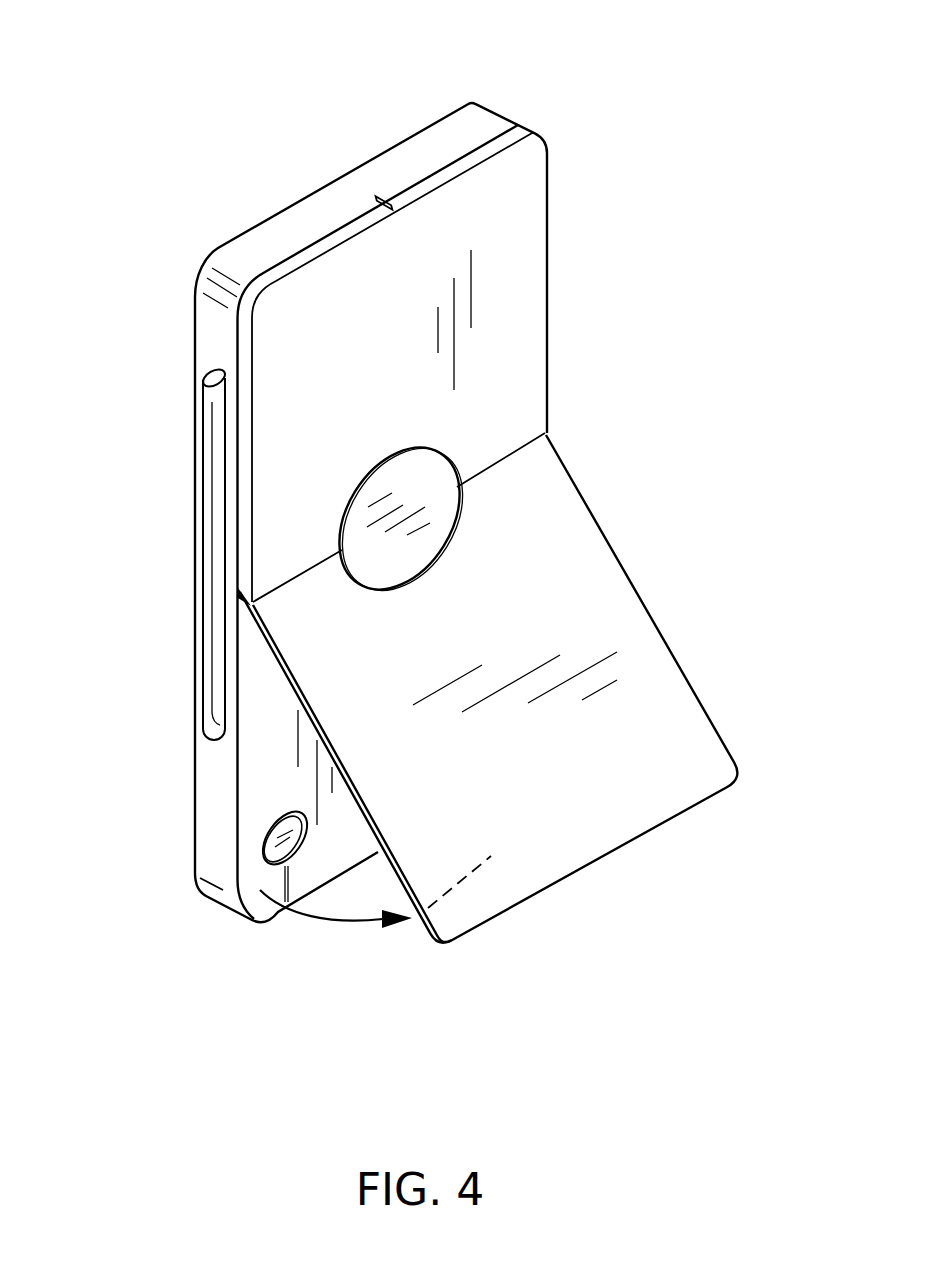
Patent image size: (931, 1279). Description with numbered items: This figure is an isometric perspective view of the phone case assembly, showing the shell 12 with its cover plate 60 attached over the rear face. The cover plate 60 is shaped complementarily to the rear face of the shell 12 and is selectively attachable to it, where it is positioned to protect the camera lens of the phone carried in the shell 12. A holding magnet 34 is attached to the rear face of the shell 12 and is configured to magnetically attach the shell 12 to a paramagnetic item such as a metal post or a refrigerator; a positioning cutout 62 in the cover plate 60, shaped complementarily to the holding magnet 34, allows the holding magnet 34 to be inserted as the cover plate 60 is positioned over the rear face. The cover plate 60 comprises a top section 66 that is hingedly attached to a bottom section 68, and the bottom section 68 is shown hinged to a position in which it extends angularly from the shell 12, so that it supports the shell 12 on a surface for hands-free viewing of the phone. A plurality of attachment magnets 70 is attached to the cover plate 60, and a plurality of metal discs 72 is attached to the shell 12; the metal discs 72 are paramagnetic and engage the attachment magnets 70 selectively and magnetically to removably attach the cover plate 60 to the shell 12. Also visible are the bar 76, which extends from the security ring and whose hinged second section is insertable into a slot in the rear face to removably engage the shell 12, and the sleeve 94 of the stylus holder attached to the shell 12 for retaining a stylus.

The shell 12 is at (213, 793).
The holding magnet 34 is at (418, 503).
The cover plate 60 is at (570, 472).
The positioning cutout 62 is at (407, 555).
The top section 66 is at (523, 230).
The bottom section 68 is at (660, 700).
The attachment magnets 70 is at (432, 905).
The metal discs 72 is at (267, 850).
The bar 76 is at (382, 197).
The sleeve 94 is at (217, 530).